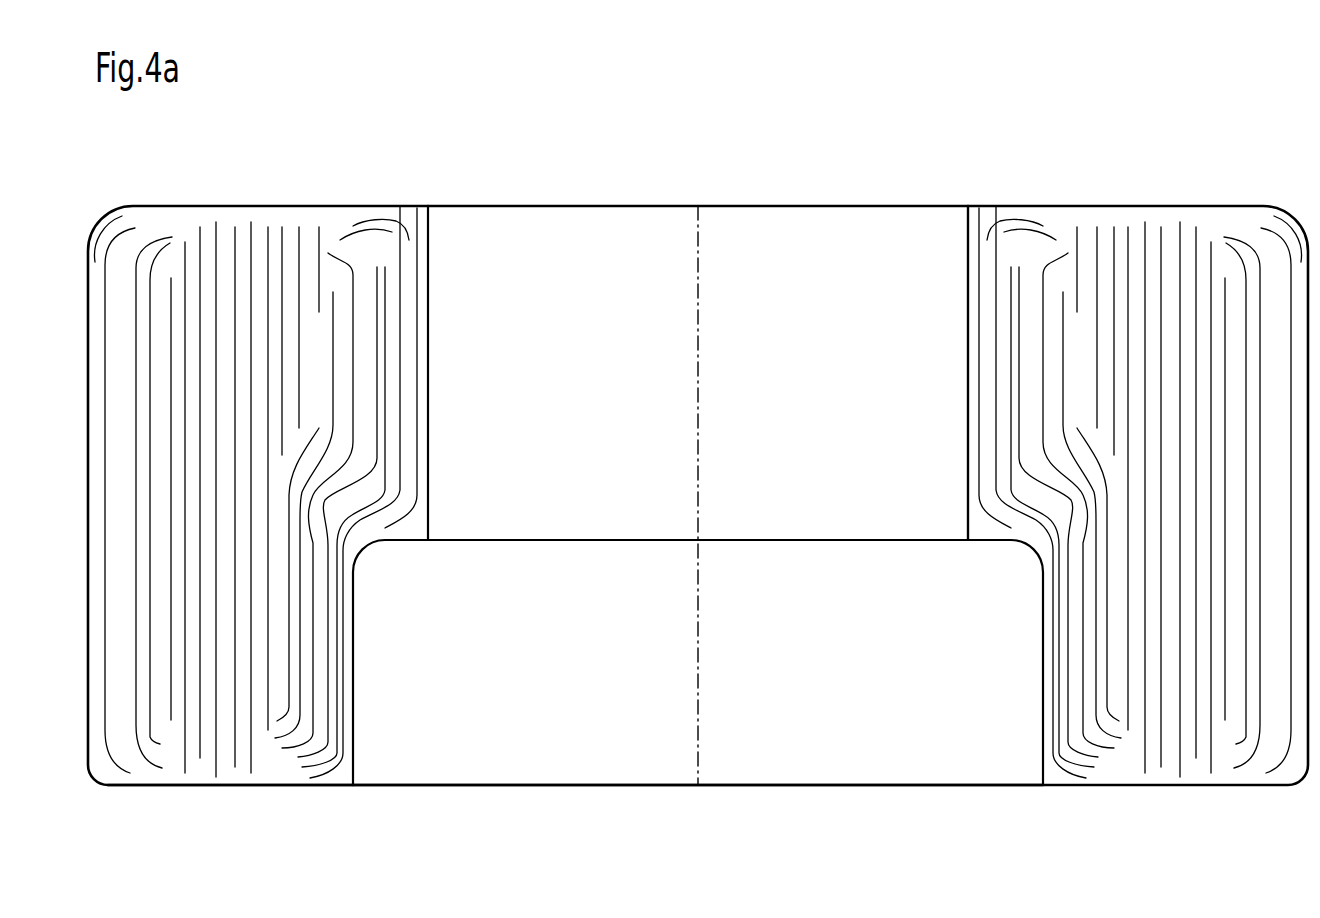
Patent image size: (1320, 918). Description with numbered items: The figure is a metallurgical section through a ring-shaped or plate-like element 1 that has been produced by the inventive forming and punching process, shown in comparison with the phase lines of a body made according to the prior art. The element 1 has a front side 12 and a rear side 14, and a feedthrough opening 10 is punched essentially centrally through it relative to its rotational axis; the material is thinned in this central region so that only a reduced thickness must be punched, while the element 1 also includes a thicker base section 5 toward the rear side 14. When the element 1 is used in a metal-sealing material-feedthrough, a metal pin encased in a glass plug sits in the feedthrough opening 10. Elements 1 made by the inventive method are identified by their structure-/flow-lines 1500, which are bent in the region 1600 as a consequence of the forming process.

The ring-shaped or plate-like element 1 is at (786, 162).
The base section 5 is at (553, 787).
The feedthrough opening 10 is at (560, 238).
The front side 12 is at (217, 205).
The rear side 14 is at (208, 786).
The structure-/flow-lines 1500 is at (975, 394).
The region 1600 is at (1015, 218).